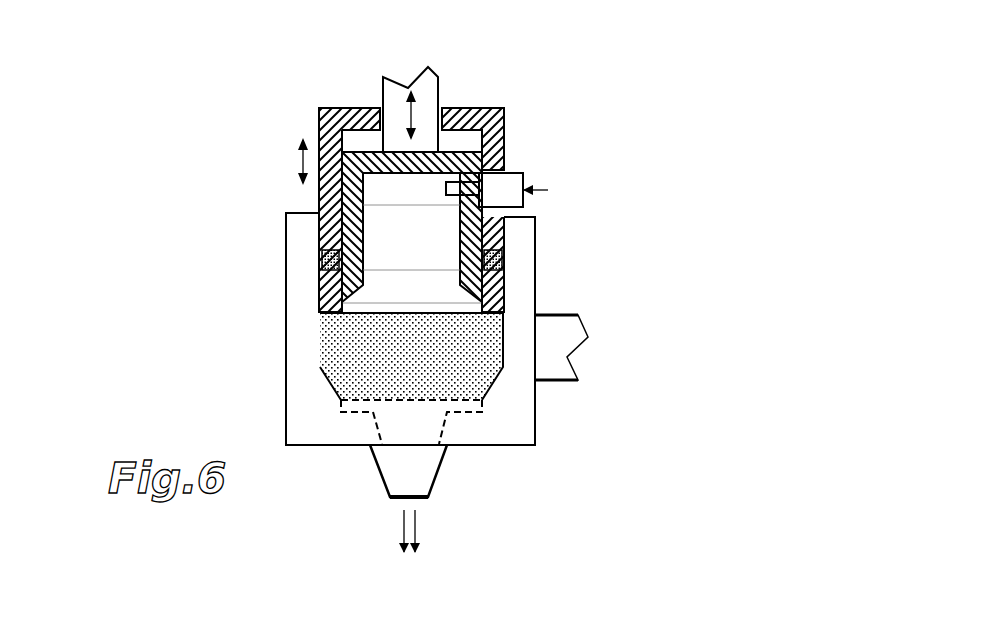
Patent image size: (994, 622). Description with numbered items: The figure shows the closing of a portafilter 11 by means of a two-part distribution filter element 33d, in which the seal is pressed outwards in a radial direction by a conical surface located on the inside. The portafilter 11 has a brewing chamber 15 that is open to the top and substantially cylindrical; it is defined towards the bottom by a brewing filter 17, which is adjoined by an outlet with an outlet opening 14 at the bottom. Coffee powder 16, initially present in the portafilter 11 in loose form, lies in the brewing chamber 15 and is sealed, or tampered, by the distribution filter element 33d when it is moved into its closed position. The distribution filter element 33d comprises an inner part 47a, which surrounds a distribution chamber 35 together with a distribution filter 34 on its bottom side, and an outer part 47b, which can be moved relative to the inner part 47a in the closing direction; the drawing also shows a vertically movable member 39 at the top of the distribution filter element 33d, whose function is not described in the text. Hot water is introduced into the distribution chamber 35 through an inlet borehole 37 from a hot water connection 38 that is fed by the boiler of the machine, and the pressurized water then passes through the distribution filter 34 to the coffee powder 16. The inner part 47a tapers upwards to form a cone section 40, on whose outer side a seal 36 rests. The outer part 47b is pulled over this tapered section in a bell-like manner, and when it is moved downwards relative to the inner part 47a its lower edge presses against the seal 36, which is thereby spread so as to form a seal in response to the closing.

The portafilter 11 is at (572, 449).
The outlet opening 14 is at (428, 466).
The brewing chamber 15 is at (317, 370).
The coffee powder 16 is at (460, 380).
The brewing filter 17 is at (362, 400).
The distribution filter element 33d is at (283, 168).
The distribution filter 34 is at (392, 313).
The distribution chamber 35 is at (417, 240).
The seal 36 is at (320, 260).
The inlet borehole 37 is at (472, 152).
The hot water connection 38 is at (510, 172).
The rod 39 is at (425, 82).
The cone section 40 is at (498, 276).
The inner part 47a is at (320, 197).
The outer part 47b is at (330, 125).